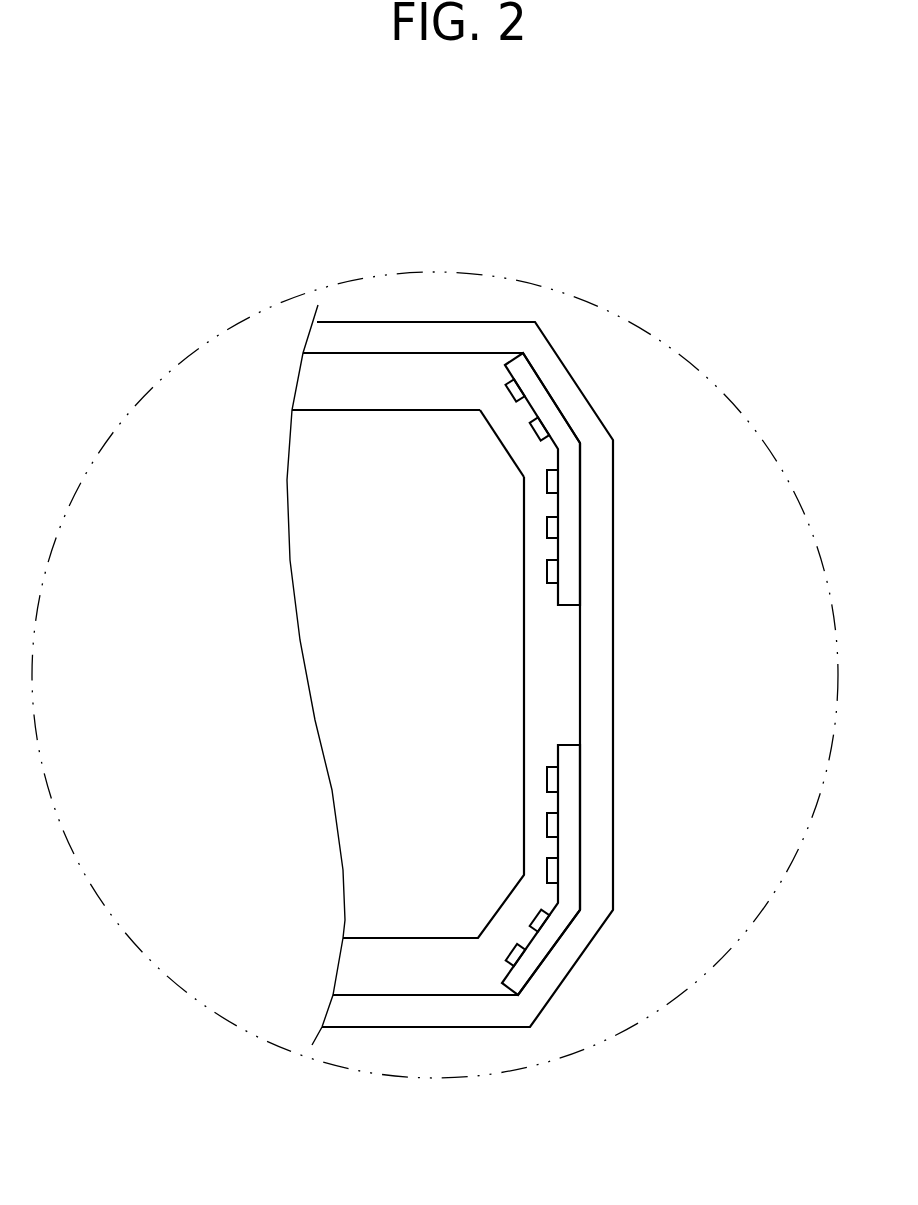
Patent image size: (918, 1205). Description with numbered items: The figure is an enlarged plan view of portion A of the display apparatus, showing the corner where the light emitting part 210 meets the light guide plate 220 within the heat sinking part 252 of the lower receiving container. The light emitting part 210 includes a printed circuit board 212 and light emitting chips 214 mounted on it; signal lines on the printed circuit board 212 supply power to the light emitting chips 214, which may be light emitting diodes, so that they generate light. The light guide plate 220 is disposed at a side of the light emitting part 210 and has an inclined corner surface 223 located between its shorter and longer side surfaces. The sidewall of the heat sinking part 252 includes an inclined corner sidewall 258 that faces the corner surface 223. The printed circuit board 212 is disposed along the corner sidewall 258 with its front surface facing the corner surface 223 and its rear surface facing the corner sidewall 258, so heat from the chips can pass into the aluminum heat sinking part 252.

The light emitting part 210 is at (610, 674).
The printed circuit board 212 is at (533, 382).
The light emitting chip 214 is at (538, 432).
The light guide plate 220 is at (513, 658).
The corner surface 223 is at (510, 457).
The heat sinking part 252 is at (397, 370).
The corner sidewall 258 is at (550, 353).
The portion A is at (596, 1045).